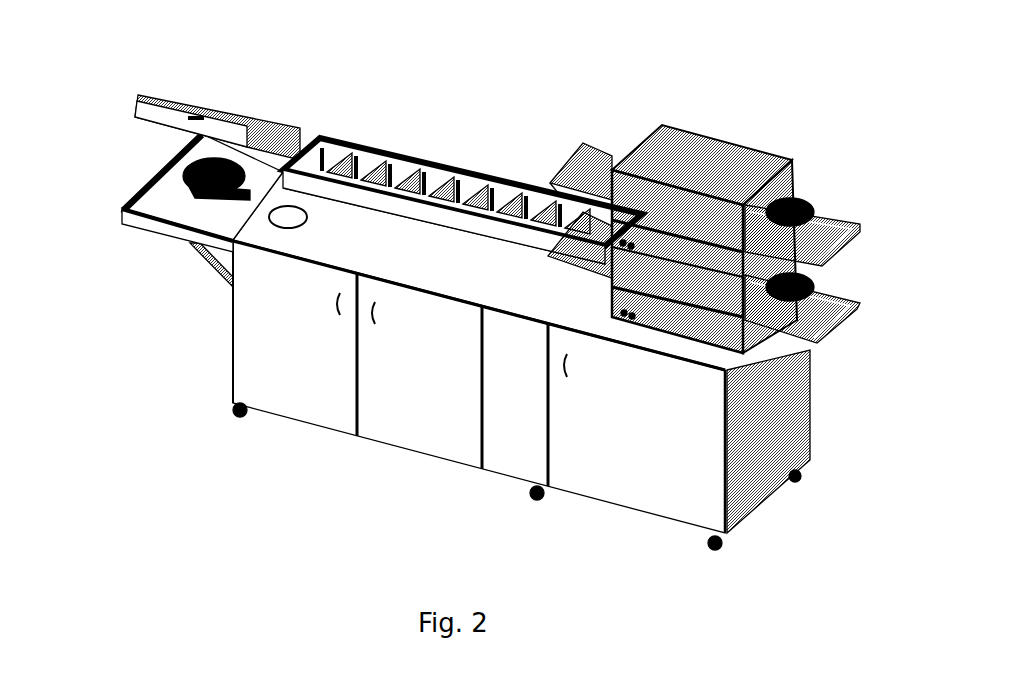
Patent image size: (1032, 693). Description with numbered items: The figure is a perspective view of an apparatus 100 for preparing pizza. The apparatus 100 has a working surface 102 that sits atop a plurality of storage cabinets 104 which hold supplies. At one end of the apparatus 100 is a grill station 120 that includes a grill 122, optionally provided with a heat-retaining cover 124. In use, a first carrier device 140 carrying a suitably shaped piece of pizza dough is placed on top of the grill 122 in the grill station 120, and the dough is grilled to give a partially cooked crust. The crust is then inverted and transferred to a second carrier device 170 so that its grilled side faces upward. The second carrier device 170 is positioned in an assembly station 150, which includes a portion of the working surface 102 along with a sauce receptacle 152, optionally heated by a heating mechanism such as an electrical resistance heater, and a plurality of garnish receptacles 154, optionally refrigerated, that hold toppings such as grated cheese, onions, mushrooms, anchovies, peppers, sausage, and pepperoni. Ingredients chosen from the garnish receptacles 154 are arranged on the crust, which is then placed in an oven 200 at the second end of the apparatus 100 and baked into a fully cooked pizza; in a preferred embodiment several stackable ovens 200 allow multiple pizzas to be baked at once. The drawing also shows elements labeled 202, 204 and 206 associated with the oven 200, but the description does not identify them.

The apparatus 100 is at (762, 100).
The working surface 102 is at (337, 228).
The storage cabinets 104 is at (308, 365).
The grill station 120 is at (158, 174).
The grill 122 is at (130, 197).
The heat-retaining cover 124 is at (210, 100).
The first carrier device 140 is at (198, 197).
The assembly station 150 is at (462, 161).
The sauce receptacle 152 is at (282, 214).
The garnish receptacles 154 is at (467, 188).
The second carrier device 170 is at (793, 205).
The oven 200 is at (739, 261).
The input tray 202 is at (593, 163).
The upper output tray 204 is at (838, 237).
The lower output tray 206 is at (755, 312).